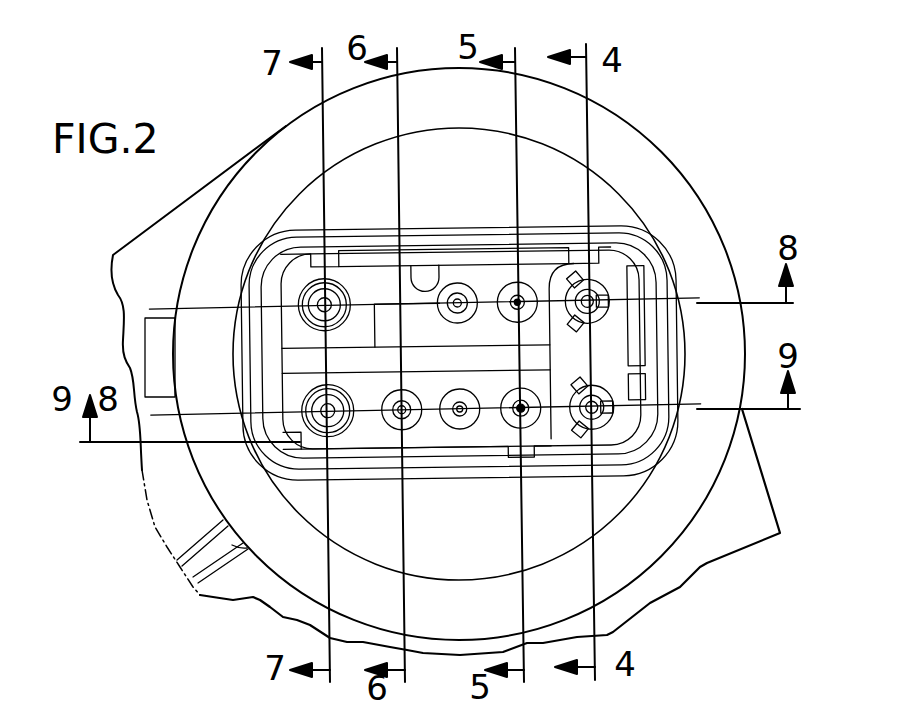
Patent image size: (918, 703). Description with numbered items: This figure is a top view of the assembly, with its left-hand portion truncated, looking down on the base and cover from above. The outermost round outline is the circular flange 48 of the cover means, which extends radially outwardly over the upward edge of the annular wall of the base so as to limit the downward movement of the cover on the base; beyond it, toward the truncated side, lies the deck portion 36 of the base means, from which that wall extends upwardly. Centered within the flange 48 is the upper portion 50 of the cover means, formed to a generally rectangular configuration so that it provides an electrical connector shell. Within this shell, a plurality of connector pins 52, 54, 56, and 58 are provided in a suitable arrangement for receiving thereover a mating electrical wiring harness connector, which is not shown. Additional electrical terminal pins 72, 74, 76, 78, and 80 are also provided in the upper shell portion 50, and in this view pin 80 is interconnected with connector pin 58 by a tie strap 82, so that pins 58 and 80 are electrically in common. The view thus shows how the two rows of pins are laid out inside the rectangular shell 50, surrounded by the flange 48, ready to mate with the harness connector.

The deck portion 36 is at (182, 498).
The circular flange 48 is at (682, 175).
The upper portion 50 is at (563, 226).
The connector pin 52 is at (312, 300).
The connector pin 54 is at (453, 282).
The connector pin 56 is at (516, 285).
The connector pin 58 is at (575, 288).
The electrical terminal pin 72 is at (318, 420).
The electrical terminal pin 74 is at (397, 420).
The electrical terminal pin 76 is at (461, 421).
The electrical terminal pin 78 is at (523, 421).
The electrical terminal pin 80 is at (604, 418).
The tie strap 82 is at (655, 413).